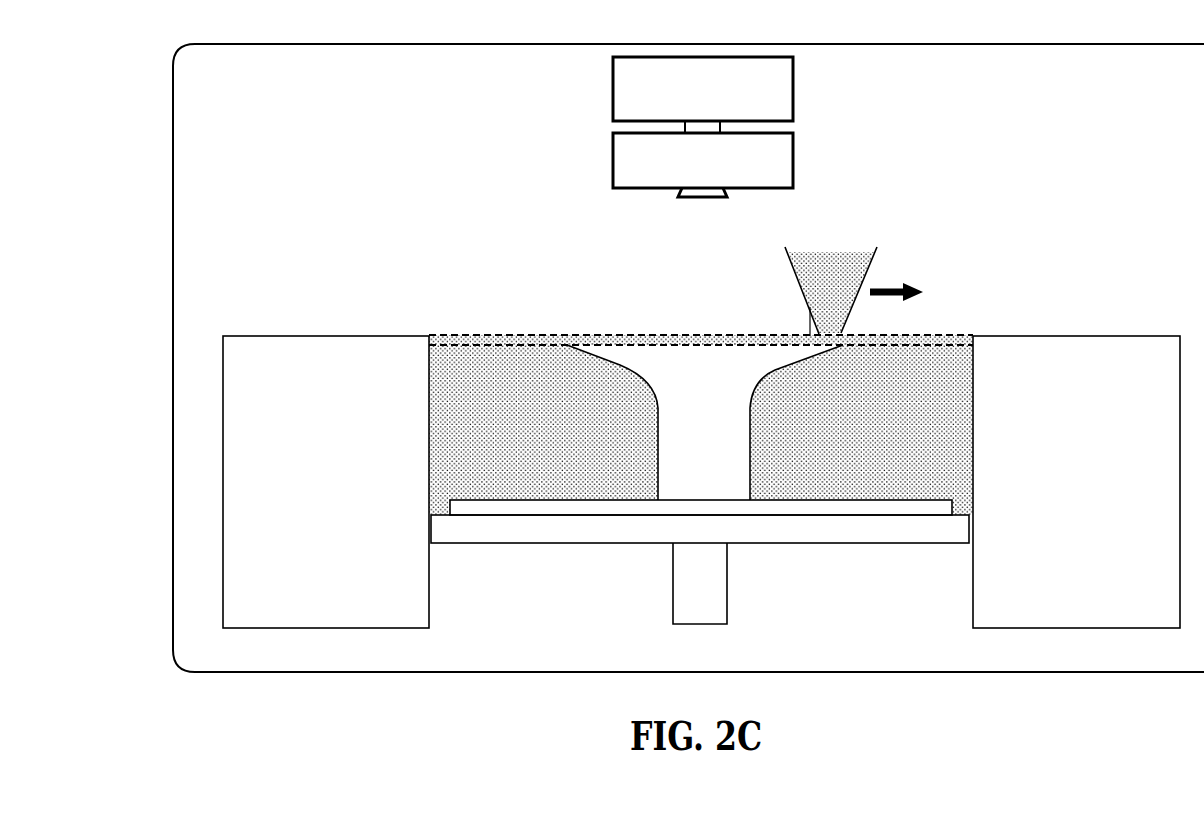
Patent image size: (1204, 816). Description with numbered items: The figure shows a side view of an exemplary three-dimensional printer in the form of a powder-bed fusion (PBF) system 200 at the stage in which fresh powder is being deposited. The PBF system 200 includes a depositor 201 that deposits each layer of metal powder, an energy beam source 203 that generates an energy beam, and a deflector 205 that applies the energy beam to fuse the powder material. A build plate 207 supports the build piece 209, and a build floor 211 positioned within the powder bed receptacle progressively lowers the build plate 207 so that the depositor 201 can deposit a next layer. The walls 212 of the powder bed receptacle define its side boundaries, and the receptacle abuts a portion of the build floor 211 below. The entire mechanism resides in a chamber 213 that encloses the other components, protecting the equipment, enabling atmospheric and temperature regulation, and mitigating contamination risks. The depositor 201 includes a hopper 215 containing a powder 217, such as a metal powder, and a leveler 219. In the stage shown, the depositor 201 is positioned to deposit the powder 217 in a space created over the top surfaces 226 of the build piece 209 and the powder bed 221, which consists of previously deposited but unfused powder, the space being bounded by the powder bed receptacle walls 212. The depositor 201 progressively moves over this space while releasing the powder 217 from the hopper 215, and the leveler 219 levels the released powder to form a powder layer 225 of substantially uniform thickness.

The powder-bed fusion (PBF) system 200 is at (688, 390).
The depositor 201 is at (805, 245).
The energy beam source 203 is at (703, 95).
The deflector 205 is at (703, 165).
The build plate 207 is at (920, 500).
The build piece 209 is at (645, 340).
The build floor 211 is at (768, 543).
The powder bed receptacle walls 212 is at (701, 482).
The chamber 213 is at (688, 358).
The hopper 215 is at (867, 281).
The powder 217 is at (828, 272).
The leveler 219 is at (751, 305).
The powder bed 221 is at (924, 377).
The powder layer 225 is at (441, 340).
The top surfaces 226 is at (511, 335).